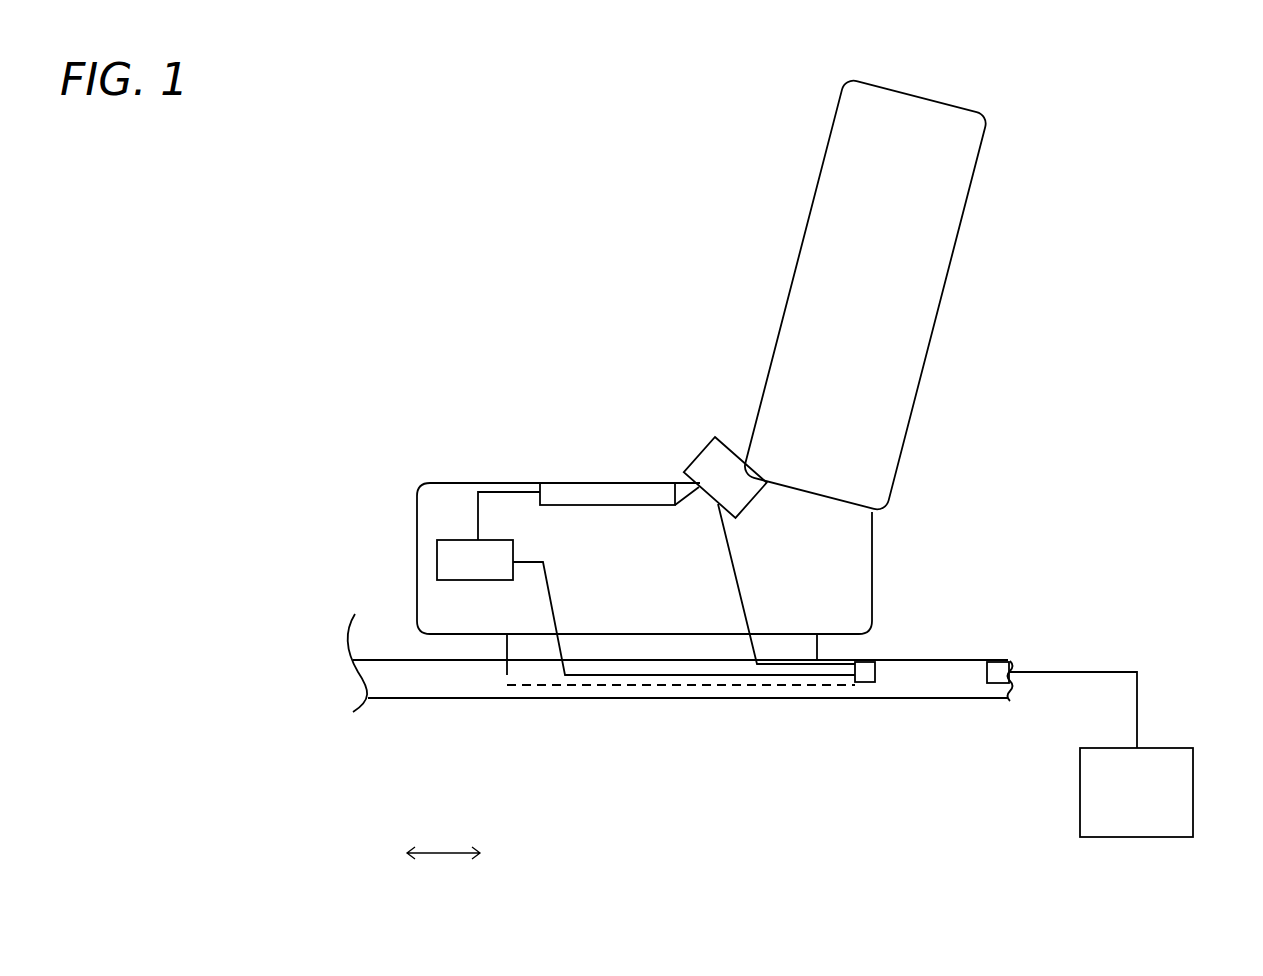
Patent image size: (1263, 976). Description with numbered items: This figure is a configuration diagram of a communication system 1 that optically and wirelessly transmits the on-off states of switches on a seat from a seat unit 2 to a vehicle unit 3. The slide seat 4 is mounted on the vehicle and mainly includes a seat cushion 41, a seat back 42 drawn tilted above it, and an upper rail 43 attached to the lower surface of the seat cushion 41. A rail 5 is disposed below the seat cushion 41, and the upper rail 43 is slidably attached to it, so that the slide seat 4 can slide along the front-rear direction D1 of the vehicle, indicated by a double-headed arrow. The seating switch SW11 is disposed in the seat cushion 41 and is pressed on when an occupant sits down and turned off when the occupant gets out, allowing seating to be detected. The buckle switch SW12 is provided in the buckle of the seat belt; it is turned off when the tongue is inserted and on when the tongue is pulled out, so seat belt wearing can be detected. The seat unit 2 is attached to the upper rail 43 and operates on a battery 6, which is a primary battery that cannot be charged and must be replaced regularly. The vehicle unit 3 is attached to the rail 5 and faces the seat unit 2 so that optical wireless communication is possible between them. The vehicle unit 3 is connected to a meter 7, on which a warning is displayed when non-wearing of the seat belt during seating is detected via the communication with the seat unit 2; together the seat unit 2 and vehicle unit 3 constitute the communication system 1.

The communication system 1 is at (758, 794).
The seat unit 2 is at (862, 684).
The vehicle unit 3 is at (1006, 684).
The slide seat 4 is at (707, 376).
The seat cushion 41 is at (457, 483).
The seat back 42 is at (933, 343).
The upper rail 43 is at (818, 647).
The rail 5 is at (479, 699).
The battery 6 is at (437, 560).
The meter 7 is at (1194, 810).
The seating switch SW11 is at (620, 483).
The buckle switch SW12 is at (703, 447).
The front-rear direction D1 is at (442, 856).